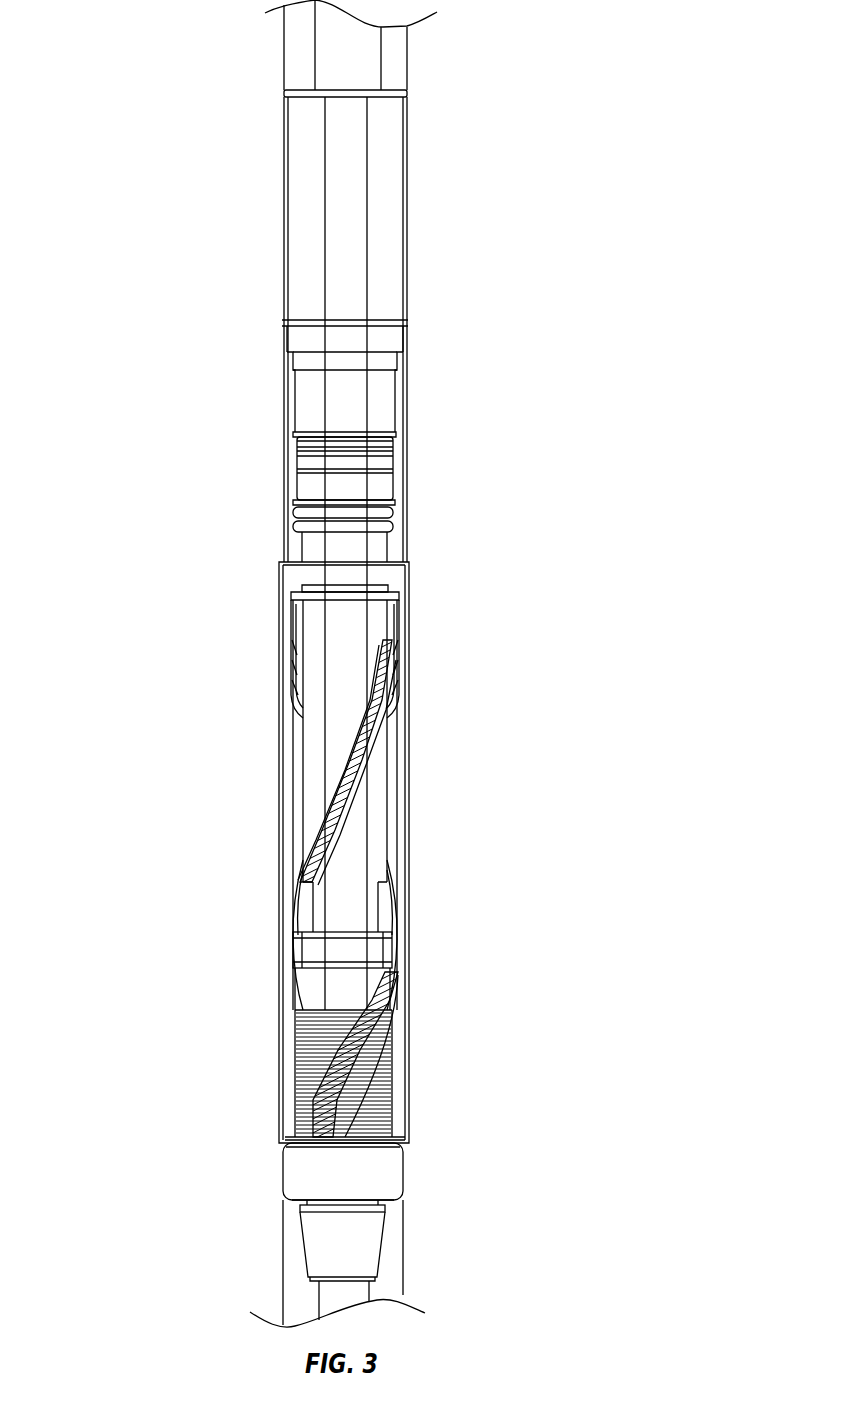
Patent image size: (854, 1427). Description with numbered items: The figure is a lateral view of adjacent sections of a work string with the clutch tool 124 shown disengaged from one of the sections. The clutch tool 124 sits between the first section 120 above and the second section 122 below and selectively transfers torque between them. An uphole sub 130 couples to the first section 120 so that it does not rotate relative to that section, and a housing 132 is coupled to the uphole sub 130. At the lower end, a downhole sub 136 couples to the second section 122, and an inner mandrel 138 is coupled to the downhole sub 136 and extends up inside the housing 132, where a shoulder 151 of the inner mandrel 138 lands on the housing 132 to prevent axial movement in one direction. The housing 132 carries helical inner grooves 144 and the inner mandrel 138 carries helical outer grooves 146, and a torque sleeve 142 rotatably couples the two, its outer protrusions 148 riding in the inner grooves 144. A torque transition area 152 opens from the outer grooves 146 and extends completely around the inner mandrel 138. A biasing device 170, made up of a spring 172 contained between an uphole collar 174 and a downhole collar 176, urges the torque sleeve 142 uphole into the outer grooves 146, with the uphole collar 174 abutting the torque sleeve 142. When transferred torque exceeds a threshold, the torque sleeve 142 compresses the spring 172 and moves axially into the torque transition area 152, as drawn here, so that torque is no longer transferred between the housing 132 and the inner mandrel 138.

The first section 120 is at (282, 48).
The uphole sub 130 is at (282, 204).
The housing 132 is at (290, 490).
The shoulder 151 is at (395, 496).
The clutch tool 124 is at (137, 672).
The inner mandrel 138 is at (375, 617).
The outer grooves 146 is at (353, 777).
The inner grooves 144 is at (395, 895).
The torque sleeve 142 is at (365, 950).
The torque transition area 152 is at (320, 897).
The outer protrusions 148 is at (308, 945).
The uphole collar 174 is at (365, 995).
The spring 172 is at (365, 1105).
The biasing device 170 is at (258, 1073).
The downhole sub 136 is at (290, 1168).
The downhole collar 176 is at (365, 1187).
The second section 122 is at (283, 1257).